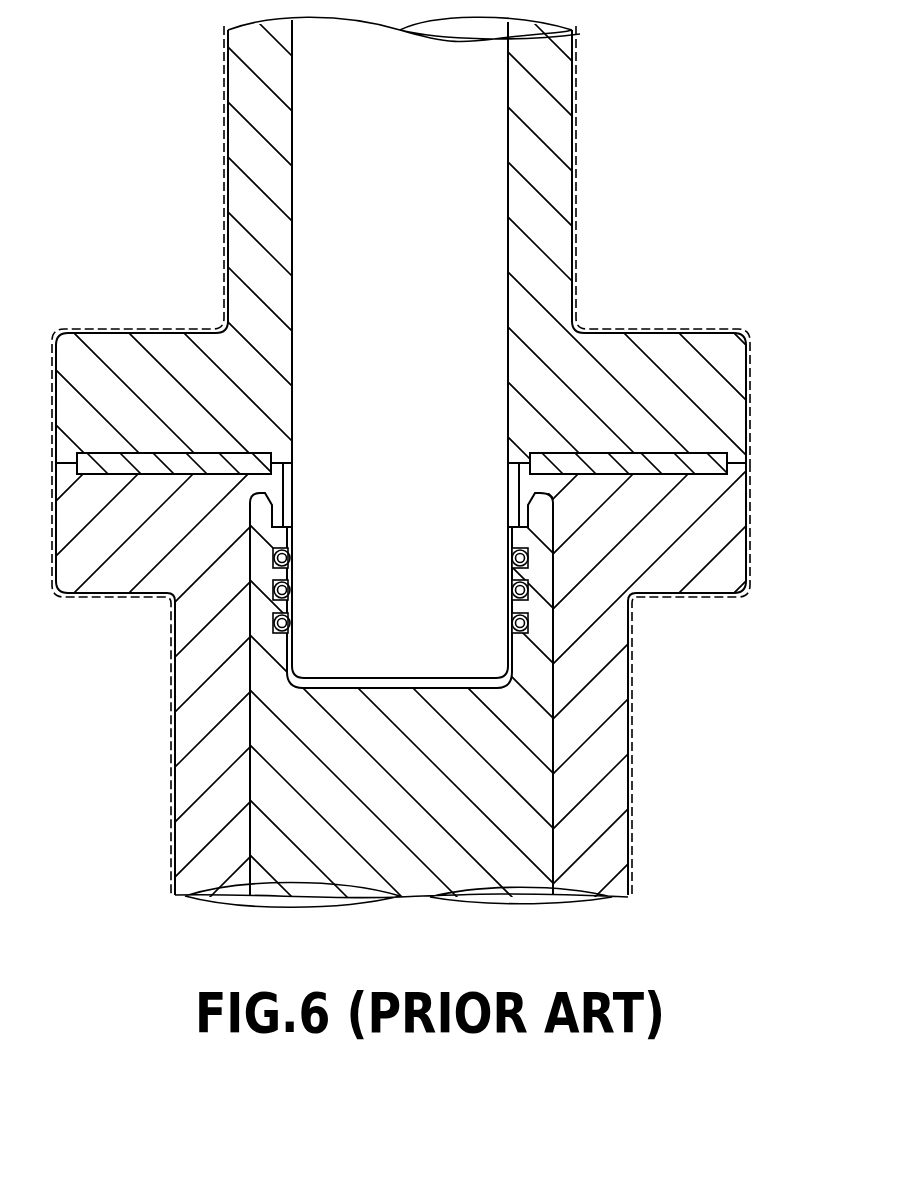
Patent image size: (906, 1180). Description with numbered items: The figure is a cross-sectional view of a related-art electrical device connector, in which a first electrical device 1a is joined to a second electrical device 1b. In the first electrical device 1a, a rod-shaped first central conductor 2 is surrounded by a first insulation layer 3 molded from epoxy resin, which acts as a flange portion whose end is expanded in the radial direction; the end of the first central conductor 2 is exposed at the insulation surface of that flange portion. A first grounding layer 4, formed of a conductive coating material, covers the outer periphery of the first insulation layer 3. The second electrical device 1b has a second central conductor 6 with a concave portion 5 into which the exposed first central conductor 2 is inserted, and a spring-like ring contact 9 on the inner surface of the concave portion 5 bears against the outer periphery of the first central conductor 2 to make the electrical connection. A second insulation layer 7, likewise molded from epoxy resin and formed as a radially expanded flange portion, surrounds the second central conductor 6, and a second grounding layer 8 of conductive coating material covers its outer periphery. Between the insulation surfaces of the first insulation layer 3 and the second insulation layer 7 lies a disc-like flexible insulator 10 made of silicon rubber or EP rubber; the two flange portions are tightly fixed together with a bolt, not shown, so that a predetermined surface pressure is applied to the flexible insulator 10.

The first electrical device 1a is at (684, 177).
The second electrical device 1b is at (718, 727).
The first central conductor 2 is at (508, 118).
The first insulation layer 3 is at (575, 170).
The first grounding layer 4 is at (577, 221).
The concave portion 5 is at (480, 700).
The second central conductor 6 is at (553, 742).
The second insulation layer 7 is at (632, 781).
The second grounding layer 8 is at (633, 812).
The ring contact 9 is at (528, 623).
The flexible insulator 10 is at (700, 447).